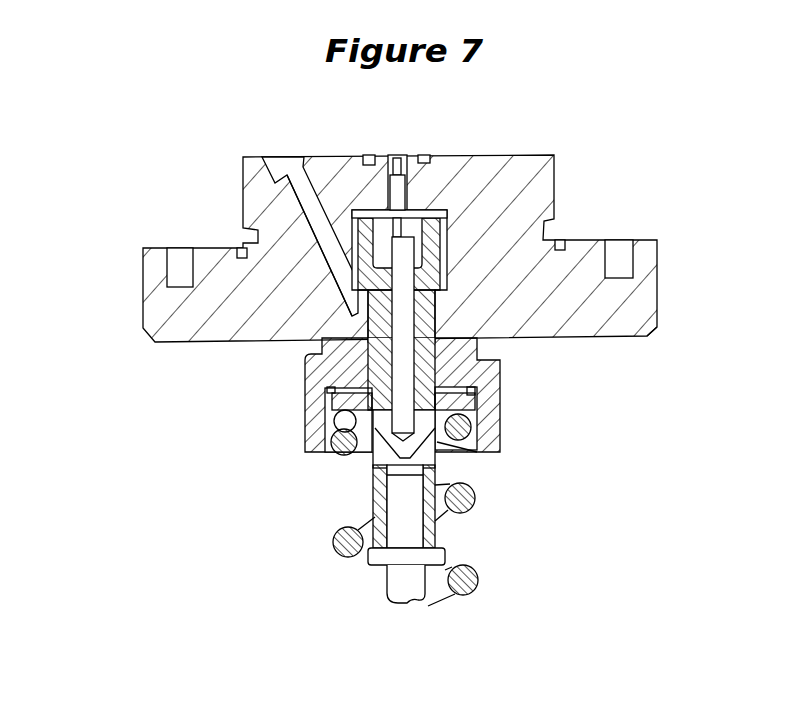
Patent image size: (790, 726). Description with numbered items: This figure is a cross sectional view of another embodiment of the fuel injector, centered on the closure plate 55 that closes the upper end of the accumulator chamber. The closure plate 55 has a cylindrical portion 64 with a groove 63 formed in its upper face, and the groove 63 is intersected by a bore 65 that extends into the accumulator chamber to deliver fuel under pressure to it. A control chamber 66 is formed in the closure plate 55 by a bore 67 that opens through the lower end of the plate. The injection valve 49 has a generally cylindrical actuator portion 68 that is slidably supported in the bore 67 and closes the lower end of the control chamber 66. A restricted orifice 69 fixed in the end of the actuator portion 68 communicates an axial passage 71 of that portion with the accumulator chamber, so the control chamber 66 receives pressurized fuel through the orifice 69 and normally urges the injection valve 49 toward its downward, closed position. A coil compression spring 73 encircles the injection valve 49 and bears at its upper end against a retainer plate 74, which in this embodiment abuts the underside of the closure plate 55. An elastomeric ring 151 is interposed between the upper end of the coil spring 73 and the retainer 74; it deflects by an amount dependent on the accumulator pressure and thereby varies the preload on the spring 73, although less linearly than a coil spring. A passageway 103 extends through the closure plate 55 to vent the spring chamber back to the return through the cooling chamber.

The injection valve 49 is at (376, 575).
The closure plate 55 is at (208, 356).
The groove 63 is at (178, 252).
The cylindrical portion 64 is at (658, 282).
The bore 65 is at (589, 313).
The control chamber 66 is at (374, 160).
The bore 67 is at (460, 240).
The actuator portion 68 is at (457, 229).
The restricted orifice 69 is at (452, 212).
The axial passage 71 is at (437, 341).
The coil compression spring 73 is at (398, 158).
The retainer plate 74 is at (503, 443).
The passageway 103 is at (301, 224).
The elastomeric ring 151 is at (325, 400).